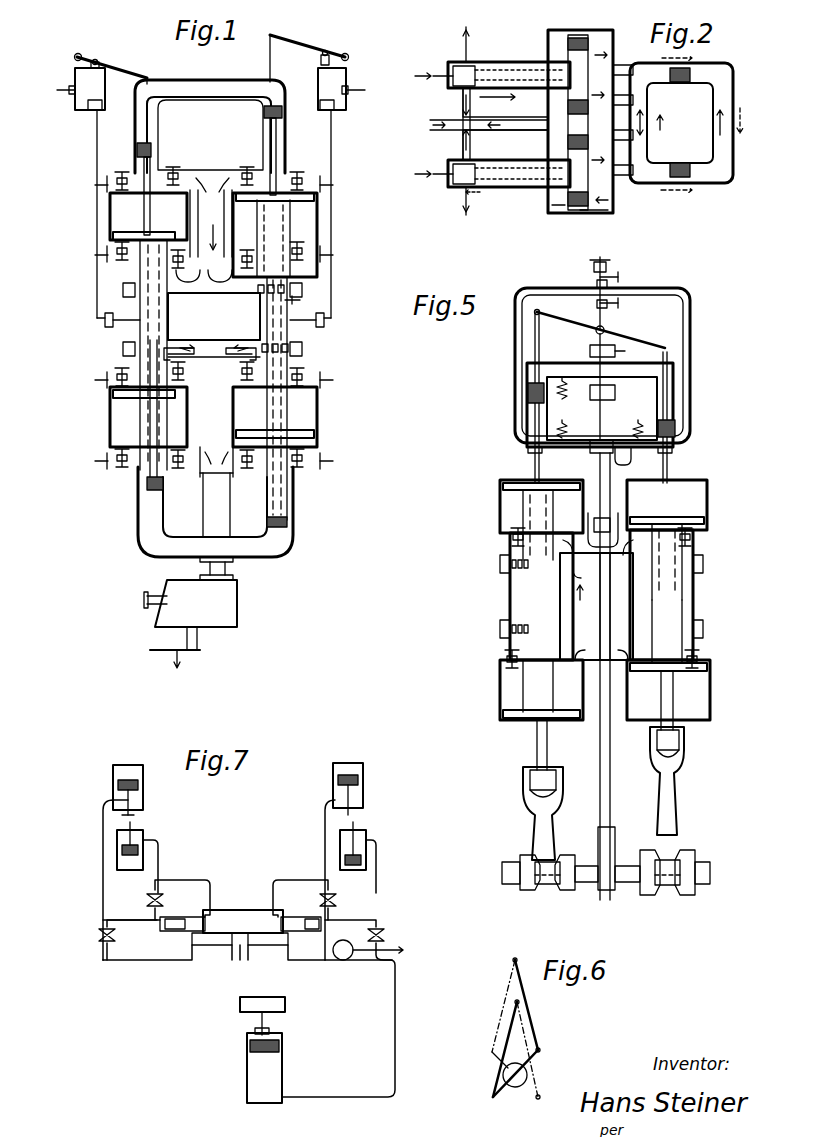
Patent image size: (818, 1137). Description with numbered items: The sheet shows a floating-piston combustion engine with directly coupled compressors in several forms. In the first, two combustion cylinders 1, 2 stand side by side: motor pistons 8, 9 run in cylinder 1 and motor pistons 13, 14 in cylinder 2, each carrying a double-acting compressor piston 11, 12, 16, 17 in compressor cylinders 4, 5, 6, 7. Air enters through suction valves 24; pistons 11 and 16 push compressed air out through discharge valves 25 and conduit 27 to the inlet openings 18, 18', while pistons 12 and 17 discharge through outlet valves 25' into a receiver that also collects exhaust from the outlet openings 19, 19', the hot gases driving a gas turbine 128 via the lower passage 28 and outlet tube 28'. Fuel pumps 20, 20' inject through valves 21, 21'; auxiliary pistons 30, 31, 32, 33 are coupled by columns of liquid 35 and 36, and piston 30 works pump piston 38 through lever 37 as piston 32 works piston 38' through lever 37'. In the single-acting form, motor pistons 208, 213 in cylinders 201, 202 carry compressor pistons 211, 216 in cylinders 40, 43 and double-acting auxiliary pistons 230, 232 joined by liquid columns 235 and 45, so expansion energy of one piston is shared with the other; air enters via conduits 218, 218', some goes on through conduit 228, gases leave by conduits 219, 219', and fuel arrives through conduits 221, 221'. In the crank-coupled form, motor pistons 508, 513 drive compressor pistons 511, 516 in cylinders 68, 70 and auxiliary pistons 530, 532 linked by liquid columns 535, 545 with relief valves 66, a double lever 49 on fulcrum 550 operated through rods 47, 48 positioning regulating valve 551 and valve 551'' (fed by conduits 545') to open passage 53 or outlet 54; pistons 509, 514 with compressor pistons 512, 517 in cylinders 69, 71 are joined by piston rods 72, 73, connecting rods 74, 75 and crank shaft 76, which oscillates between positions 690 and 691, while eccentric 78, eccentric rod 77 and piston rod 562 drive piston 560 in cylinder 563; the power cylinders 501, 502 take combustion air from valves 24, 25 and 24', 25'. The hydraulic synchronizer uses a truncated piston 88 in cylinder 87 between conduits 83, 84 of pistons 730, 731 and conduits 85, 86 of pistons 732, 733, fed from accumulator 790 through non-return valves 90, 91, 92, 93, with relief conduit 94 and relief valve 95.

In FIG. 1, the combustion cylinder 1 is at (140, 303).
In FIG. 1, the combustion cylinder 2 is at (297, 302).
In FIG. 1, the compressor cylinder 4 is at (110, 210).
In FIG. 1, the compressor cylinder 5 is at (112, 430).
In FIG. 1, the compressor cylinder 6 is at (318, 230).
In FIG. 1, the compressor cylinder 7 is at (318, 415).
In FIG. 1, the motor piston 8 is at (153, 355).
In FIG. 1, the motor piston 9 is at (150, 408).
In FIG. 1, the compressor piston 11 is at (130, 236).
In FIG. 1, the compressor piston 12 is at (112, 398).
In FIG. 1, the motor piston 13 is at (273, 238).
In FIG. 1, the motor piston 14 is at (277, 398).
In FIG. 1, the compressor piston 16 is at (300, 200).
In FIG. 1, the compressor piston 17 is at (308, 440).
In FIG. 1, the inlet openings 18 is at (91, 290).
In FIG. 1, the inlet openings 18' is at (337, 290).
In FIG. 1, the outlet openings 19 is at (154, 350).
In FIG. 1, the outlet openings 19' is at (323, 351).
In FIG. 1, the fuel pump 20 is at (59, 192).
In FIG. 1, the fuel pump 20' is at (354, 192).
In FIG. 1, the fuel injection valve 21 is at (94, 321).
In FIG. 1, the fuel injection valve 21' is at (337, 321).
In FIG. 1, the suction valve 24 is at (214, 322).
In FIG. 5, the suction valve 24 is at (598, 544).
In FIG. 5, the air inlet valve 24' is at (597, 650).
In FIG. 1, the discharge valve 25 is at (210, 232).
In FIG. 1, the outlet valve 25' is at (213, 430).
In FIG. 5, the outlet valve 25' is at (611, 586).
In FIG. 1, the conduit 27 is at (211, 217).
In FIG. 1, the lower passage 28 is at (216, 446).
In FIG. 1, the outlet tube 28' is at (185, 528).
In FIG. 1, the auxiliary piston 30 is at (152, 152).
In FIG. 1, the auxiliary piston 31 is at (156, 488).
In FIG. 1, the auxiliary piston 32 is at (268, 114).
In FIG. 1, the auxiliary piston 33 is at (268, 521).
In FIG. 1, the column of liquid 35 is at (205, 95).
In FIG. 1, the column of liquid 36 is at (236, 545).
In FIG. 1, the lever 37 is at (111, 55).
In FIG. 1, the lever 37' is at (309, 54).
In FIG. 1, the fuel pump piston 38 is at (110, 78).
In FIG. 1, the fuel pump piston 38' is at (311, 73).
In FIG. 1, the gas turbine 128 is at (227, 620).
In FIG. 2, the compressor cylinder 40 is at (600, 34).
In FIG. 2, the compressor cylinder 43 is at (562, 213).
In FIG. 2, the column of liquid 45 is at (681, 123).
In FIG. 2, the motor cylinder 201 is at (456, 66).
In FIG. 2, the motor cylinder 202 is at (458, 186).
In FIG. 2, the motor piston 208 is at (522, 68).
In FIG. 2, the compressor piston 211 is at (576, 36).
In FIG. 2, the motor piston 213 is at (530, 180).
In FIG. 2, the compressor piston 216 is at (590, 213).
In FIG. 2, the conduit 218 is at (505, 102).
In FIG. 2, the conduit 218' is at (505, 145).
In FIG. 2, the conduit 219 is at (486, 44).
In FIG. 2, the conduit 219' is at (488, 203).
In FIG. 2, the conduit 221 is at (451, 124).
In FIG. 2, the conduit 221' is at (443, 196).
In FIG. 2, the conduit 228 is at (489, 136).
In FIG. 2, the auxiliary piston 230 is at (675, 70).
In FIG. 2, the auxiliary piston 232 is at (676, 175).
In FIG. 2, the column of liquid 235 is at (725, 155).
In FIG. 5, the rod 47 is at (534, 340).
In FIG. 5, the rod 48 is at (668, 402).
In FIG. 5, the double lever 49 is at (640, 341).
In FIG. 5, the passage 53 is at (626, 280).
In FIG. 5, the outlet 54 is at (626, 306).
In FIG. 5, the relief valve 66 is at (635, 425).
In FIG. 5, the compressor cylinder 68 is at (502, 520).
In FIG. 5, the compressor cylinder 69 is at (500, 682).
In FIG. 5, the compressor cylinder 70 is at (708, 497).
In FIG. 5, the compressor cylinder 71 is at (710, 708).
In FIG. 5, the piston rod 72 is at (535, 742).
In FIG. 5, the piston rod 73 is at (670, 710).
In FIG. 5, the connecting rod 74 is at (548, 818).
In FIG. 6, the connecting rod 74 is at (510, 1020).
In FIG. 5, the connecting rod 75 is at (672, 780).
In FIG. 6, the connecting rod 75 is at (530, 1004).
In FIG. 5, the crank shaft 76 is at (628, 873).
In FIG. 6, the crank shaft 76 is at (500, 1078).
In FIG. 5, the eccentric rod 77 is at (600, 745).
In FIG. 5, the eccentric 78 is at (616, 845).
In FIG. 5, the power cylinder 501 is at (510, 597).
In FIG. 5, the power cylinder 502 is at (693, 595).
In FIG. 5, the motor piston 508 is at (539, 524).
In FIG. 5, the motor piston 509 is at (540, 686).
In FIG. 5, the compressor piston 511 is at (525, 487).
In FIG. 5, the compressor piston 512 is at (515, 712).
In FIG. 5, the motor piston 513 is at (667, 562).
In FIG. 5, the motor piston 514 is at (667, 631).
In FIG. 5, the compressor piston 516 is at (690, 522).
In FIG. 5, the compressor piston 517 is at (690, 672).
In FIG. 5, the auxiliary piston 530 is at (530, 395).
In FIG. 5, the auxiliary piston 532 is at (676, 428).
In FIG. 5, the liquid column 535 is at (660, 372).
In FIG. 5, the liquid column 545 is at (607, 457).
In FIG. 5, the conduits 545' is at (607, 365).
In FIG. 5, the fulcrum 550 is at (606, 330).
In FIG. 5, the regulating valve 551 is at (577, 386).
In FIG. 5, the regulating valve 551'' is at (622, 291).
In FIG. 5, the piston 560 is at (628, 457).
In FIG. 5, the piston rod 562 is at (604, 515).
In FIG. 5, the cylinder 563 is at (590, 450).
In FIG. 6, the crank position 690 is at (555, 1050).
In FIG. 6, the crank position 691 is at (546, 1053).
In FIG. 7, the synchronizing conduit 83 is at (103, 820).
In FIG. 7, the synchronizing conduit 84 is at (158, 853).
In FIG. 7, the synchronizing conduit 85 is at (324, 853).
In FIG. 7, the synchronizing conduit 86 is at (376, 840).
In FIG. 7, the cylinder 87 is at (275, 945).
In FIG. 7, the synchronizing piston 88 is at (248, 920).
In FIG. 7, the non-return valve 90 is at (100, 930).
In FIG. 7, the non-return valve 91 is at (148, 898).
In FIG. 7, the non-return valve 92 is at (336, 898).
In FIG. 7, the non-return valve 93 is at (382, 928).
In FIG. 7, the relief conduit 94 is at (210, 960).
In FIG. 7, the pressure relief valve 95 is at (347, 962).
In FIG. 7, the auxiliary piston 730 is at (128, 787).
In FIG. 7, the auxiliary piston 731 is at (120, 850).
In FIG. 7, the auxiliary piston 732 is at (365, 783).
In FIG. 7, the auxiliary piston 733 is at (366, 855).
In FIG. 7, the accumulator 790 is at (265, 1080).